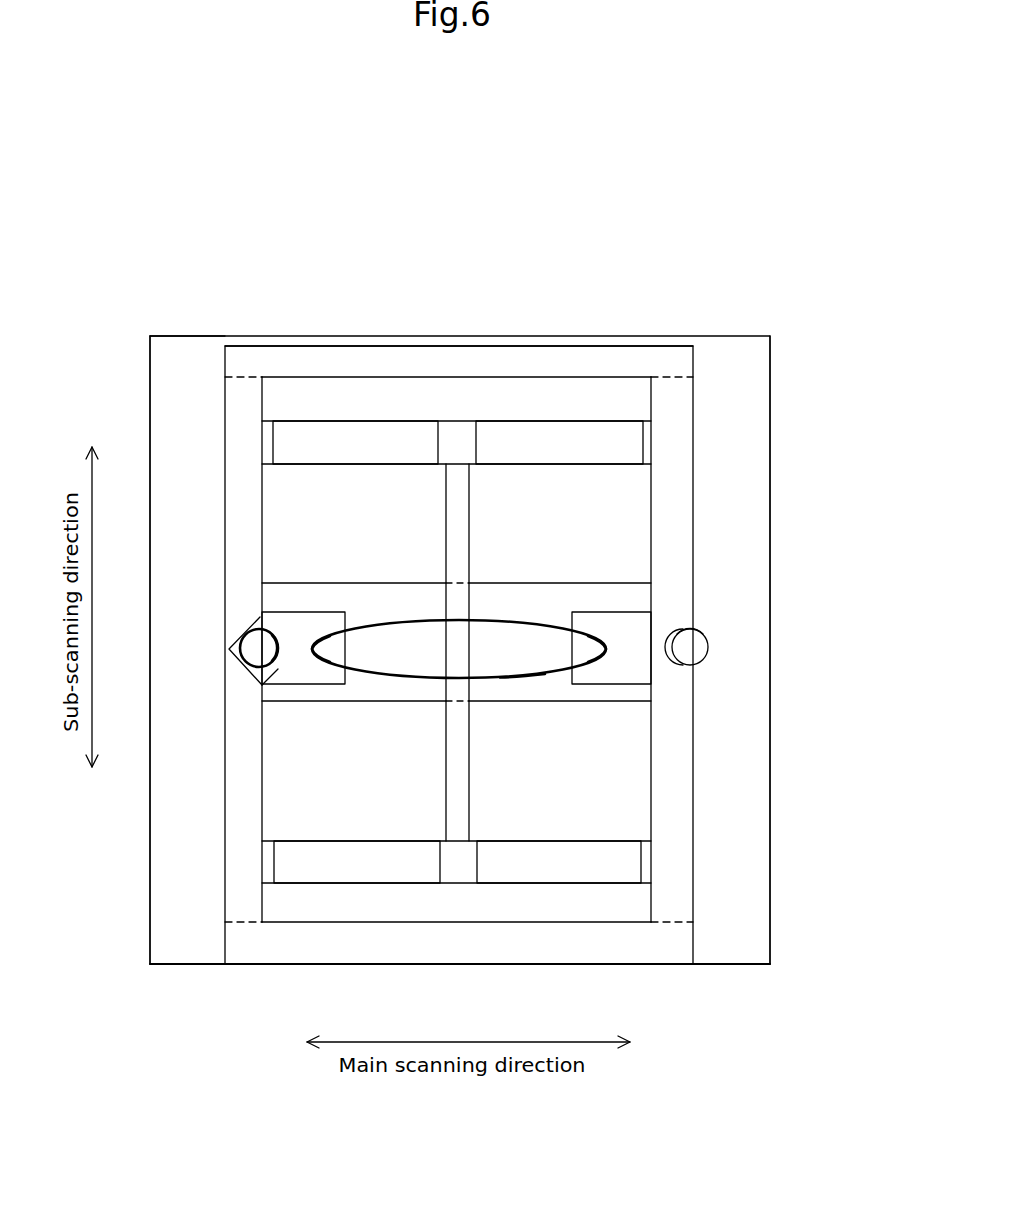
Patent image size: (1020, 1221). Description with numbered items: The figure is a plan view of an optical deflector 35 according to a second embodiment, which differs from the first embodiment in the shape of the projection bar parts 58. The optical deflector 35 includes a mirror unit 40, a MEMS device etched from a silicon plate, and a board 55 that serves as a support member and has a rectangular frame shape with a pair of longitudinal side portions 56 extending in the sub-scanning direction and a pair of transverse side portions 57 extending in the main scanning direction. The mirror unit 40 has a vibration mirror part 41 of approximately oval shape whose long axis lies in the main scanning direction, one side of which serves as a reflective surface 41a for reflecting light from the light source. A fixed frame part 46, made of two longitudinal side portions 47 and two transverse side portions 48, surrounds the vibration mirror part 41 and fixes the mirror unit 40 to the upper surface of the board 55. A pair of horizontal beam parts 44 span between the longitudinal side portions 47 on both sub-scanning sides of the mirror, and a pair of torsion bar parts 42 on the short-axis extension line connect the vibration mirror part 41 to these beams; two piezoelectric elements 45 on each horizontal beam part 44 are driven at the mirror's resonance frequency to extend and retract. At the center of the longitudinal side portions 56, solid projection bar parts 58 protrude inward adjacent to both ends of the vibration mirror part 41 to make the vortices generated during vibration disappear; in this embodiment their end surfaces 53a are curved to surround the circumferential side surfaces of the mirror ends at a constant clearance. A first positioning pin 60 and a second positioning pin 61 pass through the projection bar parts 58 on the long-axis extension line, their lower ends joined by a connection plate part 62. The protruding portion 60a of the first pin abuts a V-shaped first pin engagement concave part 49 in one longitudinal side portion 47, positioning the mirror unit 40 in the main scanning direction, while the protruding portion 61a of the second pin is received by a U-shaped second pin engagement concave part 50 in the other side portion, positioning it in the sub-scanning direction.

The optical deflector 35 is at (137, 335).
The mirror unit 40 is at (248, 336).
The vibration mirror part 41 is at (502, 618).
The reflective surface 41a is at (530, 663).
The torsion bar parts 42 is at (470, 518).
The horizontal beam parts 44 is at (352, 447).
The piezoelectric elements 45 is at (407, 427).
The fixed frame part 46 is at (685, 408).
The longitudinal side portions 47 is at (237, 778).
The transverse side portions 48 is at (368, 358).
The first pin engagement concave part 49 is at (265, 685).
The second pin engagement concave part 50 is at (703, 658).
The end surfaces 53a is at (573, 630).
The board 55 is at (195, 363).
The longitudinal side portions 56 is at (185, 437).
The transverse side portions 57 is at (318, 365).
The projection bar parts 58 is at (275, 625).
The first positioning pin 60 is at (260, 648).
The protruding portion 60a is at (282, 649).
The second positioning pin 61 is at (697, 655).
The protruding portion 61a is at (703, 630).
The connection plate part 62 is at (378, 583).